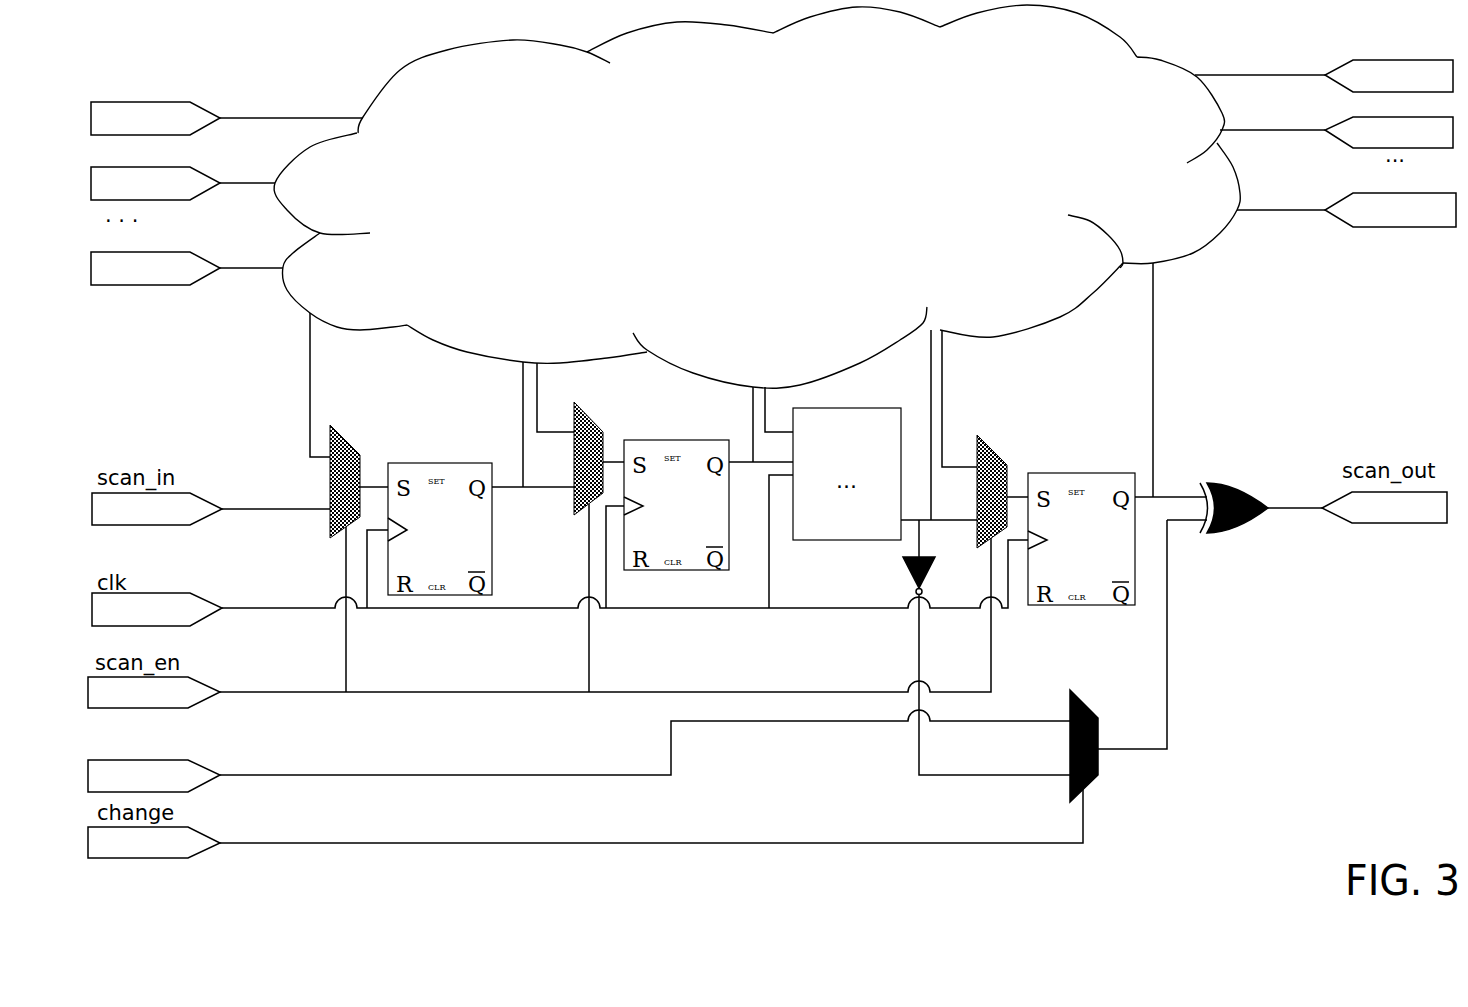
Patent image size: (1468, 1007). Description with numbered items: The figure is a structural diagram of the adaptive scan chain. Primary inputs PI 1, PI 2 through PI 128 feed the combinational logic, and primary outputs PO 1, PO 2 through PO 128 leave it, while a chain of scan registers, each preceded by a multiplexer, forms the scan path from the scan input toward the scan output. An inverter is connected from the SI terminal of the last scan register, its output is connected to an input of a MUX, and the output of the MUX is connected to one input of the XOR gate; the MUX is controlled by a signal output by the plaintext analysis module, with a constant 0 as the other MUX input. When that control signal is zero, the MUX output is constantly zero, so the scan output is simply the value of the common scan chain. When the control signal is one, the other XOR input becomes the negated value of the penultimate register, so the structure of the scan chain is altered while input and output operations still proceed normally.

The primary input PI 1 / primary output PO 1 is at (772, 85).
The primary input PI 2 / primary output PO 2 is at (772, 147).
The primary input PI 128 / primary output PO 128 is at (773, 228).
The constant 0 input 0 is at (579, 751).